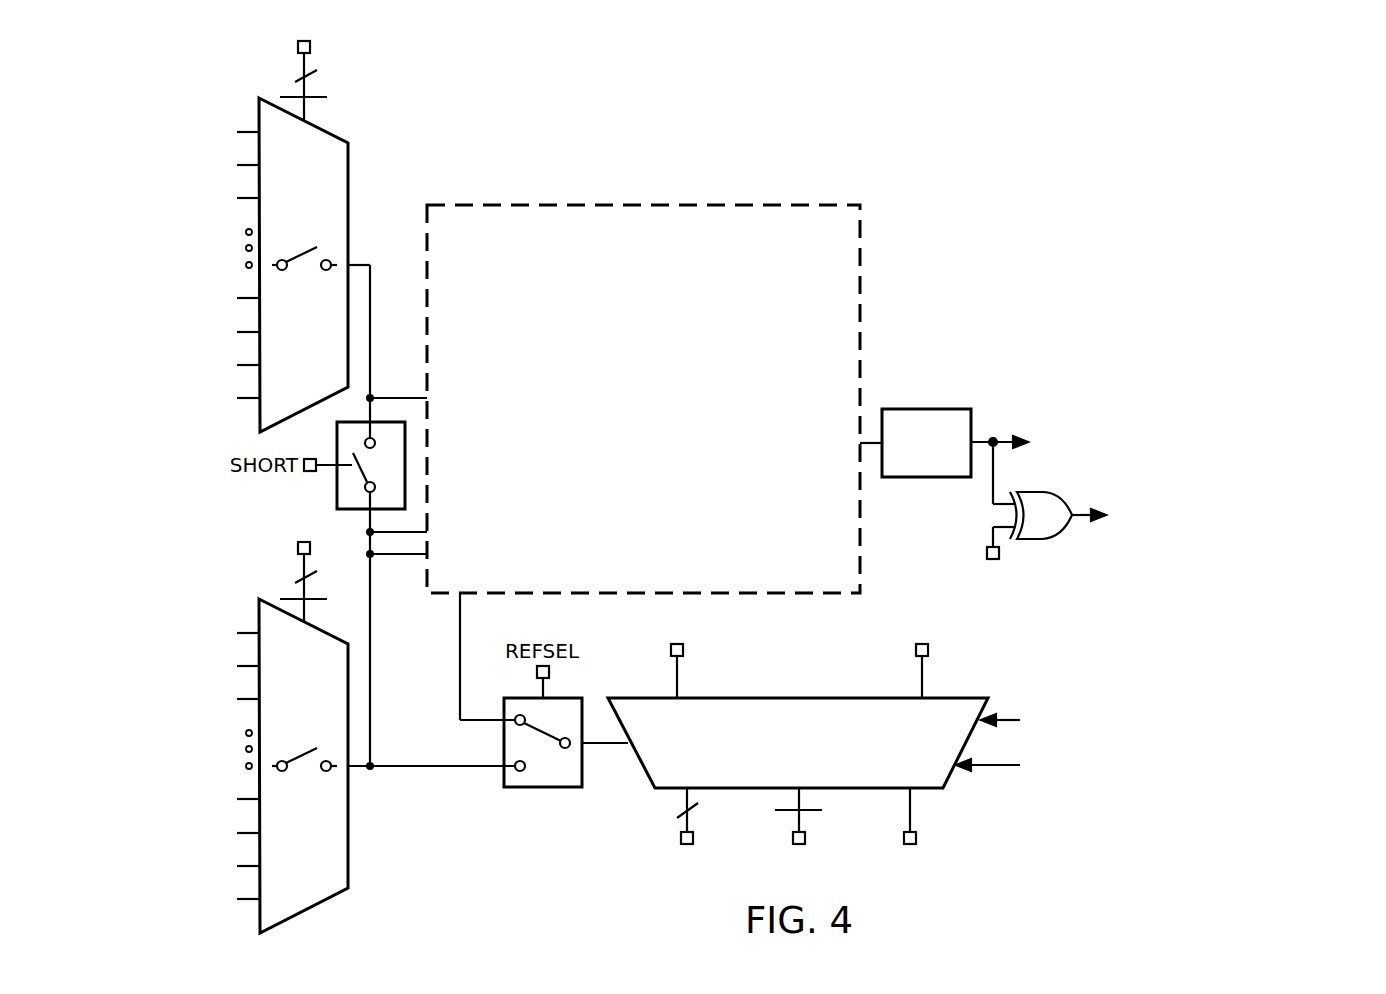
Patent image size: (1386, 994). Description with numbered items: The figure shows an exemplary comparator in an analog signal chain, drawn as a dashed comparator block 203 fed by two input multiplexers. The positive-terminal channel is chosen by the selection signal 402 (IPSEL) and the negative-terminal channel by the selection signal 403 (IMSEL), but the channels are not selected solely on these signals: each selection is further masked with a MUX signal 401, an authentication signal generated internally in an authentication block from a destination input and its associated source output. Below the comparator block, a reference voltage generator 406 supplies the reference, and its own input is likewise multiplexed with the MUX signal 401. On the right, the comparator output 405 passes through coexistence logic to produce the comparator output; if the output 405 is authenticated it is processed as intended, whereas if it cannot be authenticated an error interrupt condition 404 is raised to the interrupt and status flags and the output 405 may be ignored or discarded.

The comparator module 203 is at (978, 133).
The MUX signal 401 is at (290, 97).
The selection signal (IPSEL) 402 is at (297, 48).
The selection signal (IMSEL) 403 is at (297, 549).
The error interrupt condition 404 is at (1003, 440).
The output 405 is at (1080, 520).
The reference voltage generator 406 is at (810, 697).